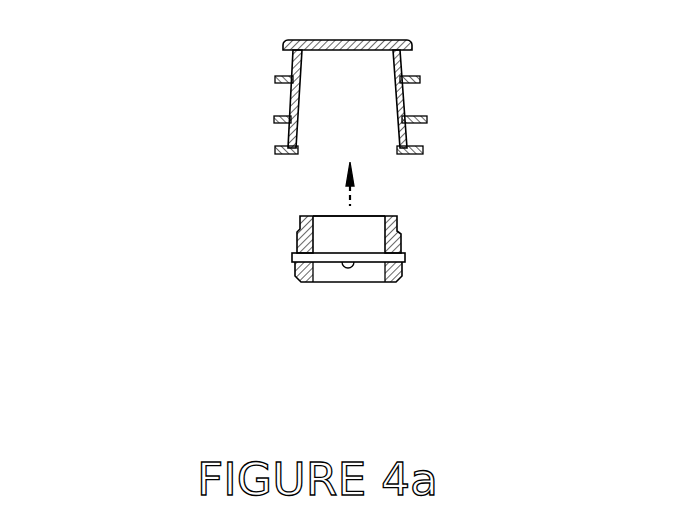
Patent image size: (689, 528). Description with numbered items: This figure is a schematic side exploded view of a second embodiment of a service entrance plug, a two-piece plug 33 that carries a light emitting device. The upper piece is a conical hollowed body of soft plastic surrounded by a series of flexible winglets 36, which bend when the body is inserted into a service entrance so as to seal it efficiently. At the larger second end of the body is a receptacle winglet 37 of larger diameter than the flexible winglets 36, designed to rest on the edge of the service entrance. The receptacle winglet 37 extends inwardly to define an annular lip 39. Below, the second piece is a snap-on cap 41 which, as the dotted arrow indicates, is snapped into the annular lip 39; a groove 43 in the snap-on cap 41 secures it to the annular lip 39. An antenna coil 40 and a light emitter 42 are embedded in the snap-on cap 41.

The two-piece plug 33 is at (478, 78).
The flexible winglets 36 is at (228, 87).
The receptacle winglet 37 is at (500, 171).
The annular lip 39 is at (215, 185).
The antenna coil 40 is at (314, 339).
The snap-on cap 41 is at (217, 286).
The light emitter 42 is at (413, 307).
The groove 43 is at (397, 242).